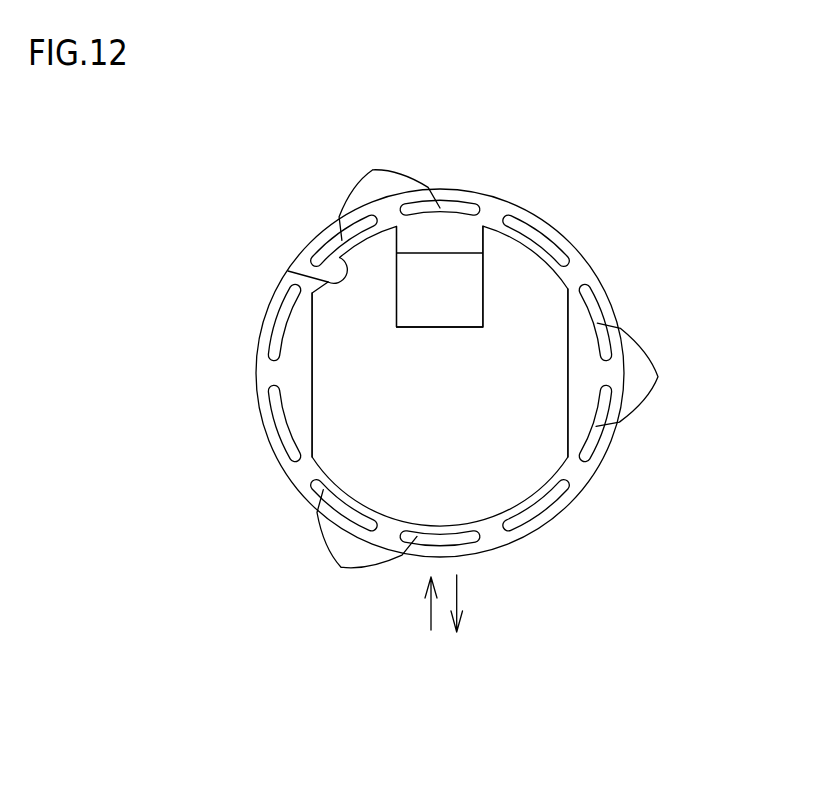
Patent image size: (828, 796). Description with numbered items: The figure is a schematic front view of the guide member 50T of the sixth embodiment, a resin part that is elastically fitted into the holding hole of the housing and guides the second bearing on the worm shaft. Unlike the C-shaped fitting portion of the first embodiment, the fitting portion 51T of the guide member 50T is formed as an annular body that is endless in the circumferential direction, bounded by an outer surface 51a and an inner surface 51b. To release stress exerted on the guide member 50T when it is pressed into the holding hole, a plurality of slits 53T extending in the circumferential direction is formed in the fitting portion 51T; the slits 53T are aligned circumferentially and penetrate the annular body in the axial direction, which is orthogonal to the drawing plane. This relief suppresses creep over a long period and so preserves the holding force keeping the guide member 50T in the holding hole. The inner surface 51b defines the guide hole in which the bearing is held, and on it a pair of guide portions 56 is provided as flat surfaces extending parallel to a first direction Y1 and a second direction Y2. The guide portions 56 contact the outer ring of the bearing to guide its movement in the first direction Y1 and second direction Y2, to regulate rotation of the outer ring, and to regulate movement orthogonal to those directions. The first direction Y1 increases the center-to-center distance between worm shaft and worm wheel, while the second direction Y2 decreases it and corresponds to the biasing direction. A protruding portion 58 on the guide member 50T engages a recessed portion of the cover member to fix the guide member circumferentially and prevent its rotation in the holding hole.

The guide member 50T is at (462, 370).
The fitting portion 51T is at (495, 210).
The outer surface 51a is at (592, 269).
The inner surface 51b is at (290, 271).
The slits 53T is at (397, 168).
The guide portions 56 is at (313, 400).
The protruding portion 58 is at (441, 318).
The first direction Y1 is at (430, 618).
The second direction Y2 is at (457, 593).